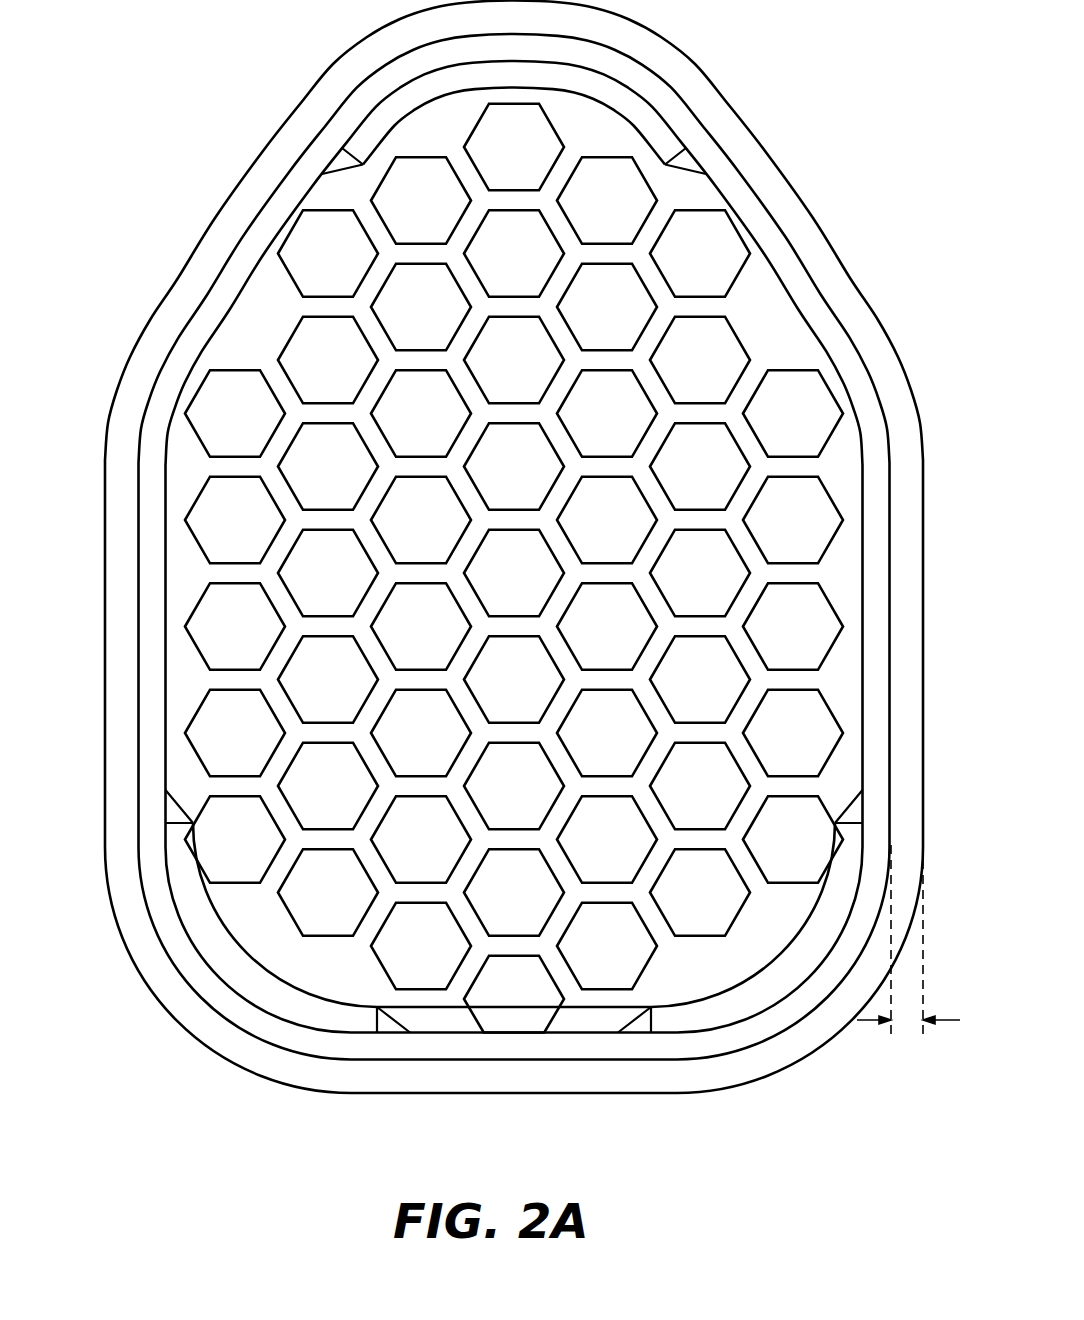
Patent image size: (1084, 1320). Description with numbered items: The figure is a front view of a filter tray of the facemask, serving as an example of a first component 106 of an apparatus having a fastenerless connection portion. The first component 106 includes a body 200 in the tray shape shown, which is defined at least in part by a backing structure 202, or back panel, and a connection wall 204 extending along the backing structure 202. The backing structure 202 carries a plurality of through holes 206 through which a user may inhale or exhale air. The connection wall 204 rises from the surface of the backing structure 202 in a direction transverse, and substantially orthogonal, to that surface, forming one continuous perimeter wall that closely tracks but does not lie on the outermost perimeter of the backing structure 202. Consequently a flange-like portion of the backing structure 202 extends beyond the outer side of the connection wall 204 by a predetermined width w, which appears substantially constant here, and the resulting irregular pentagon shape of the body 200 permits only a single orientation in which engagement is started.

The first component 106 is at (209, 187).
The body 200 is at (100, 609).
The backing structure 202 is at (106, 443).
The connection wall 204 is at (176, 928).
The through holes 206 is at (820, 402).